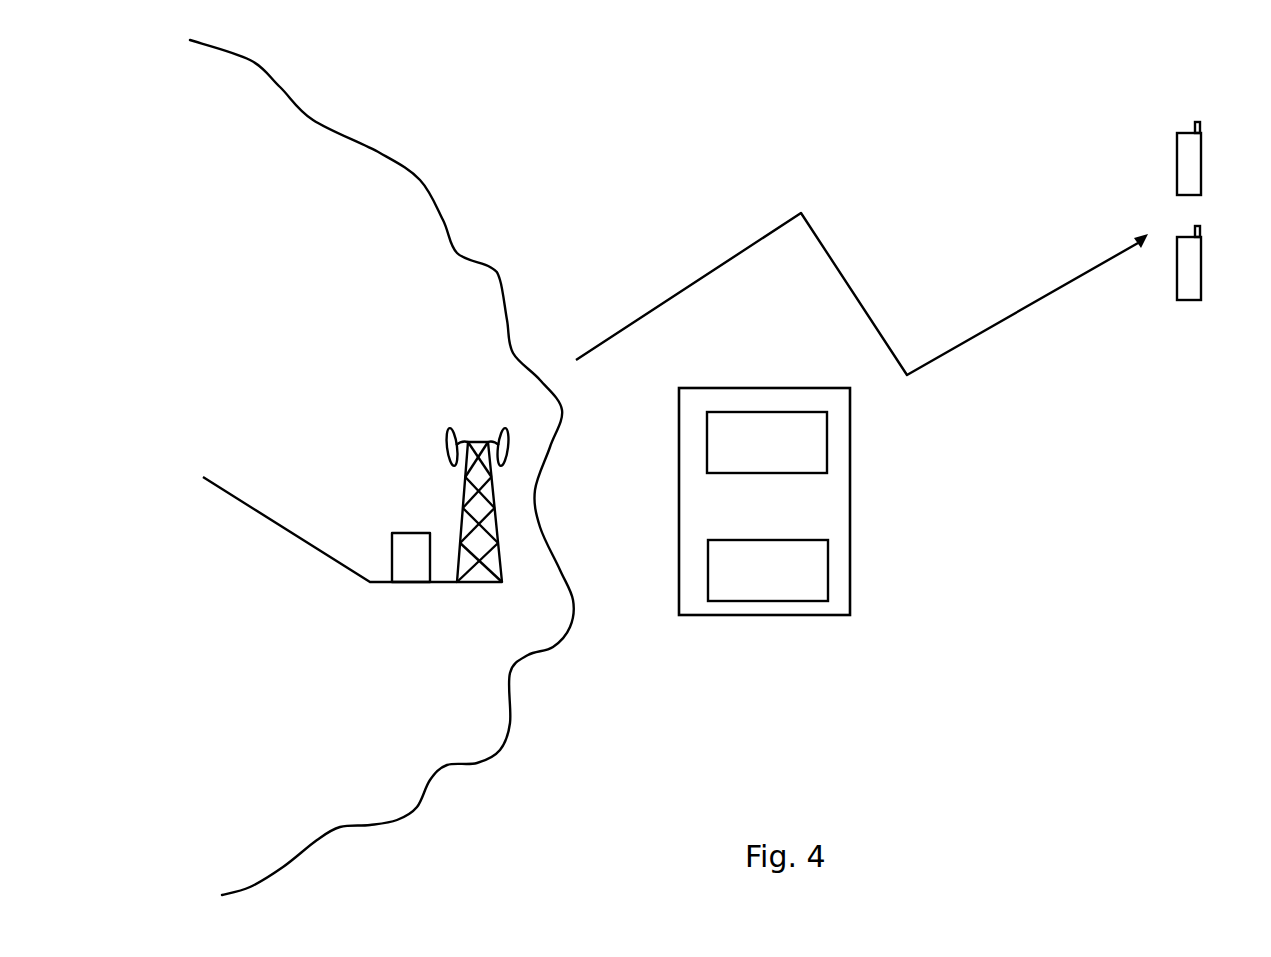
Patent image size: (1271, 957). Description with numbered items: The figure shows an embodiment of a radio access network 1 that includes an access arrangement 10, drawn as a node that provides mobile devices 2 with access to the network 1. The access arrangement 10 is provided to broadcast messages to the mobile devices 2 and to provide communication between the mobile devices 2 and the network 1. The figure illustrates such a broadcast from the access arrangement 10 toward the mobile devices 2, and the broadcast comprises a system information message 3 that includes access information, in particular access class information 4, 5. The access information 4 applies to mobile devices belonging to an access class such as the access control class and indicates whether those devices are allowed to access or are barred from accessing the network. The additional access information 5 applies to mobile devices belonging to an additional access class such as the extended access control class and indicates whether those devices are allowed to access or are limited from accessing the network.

The radio access network 1 is at (256, 271).
The mobile devices 2 is at (1202, 162).
The system information message 3 is at (828, 495).
The access class information 4 is at (767, 442).
The additional access class information 5 is at (768, 570).
The access arrangement 10 is at (428, 487).